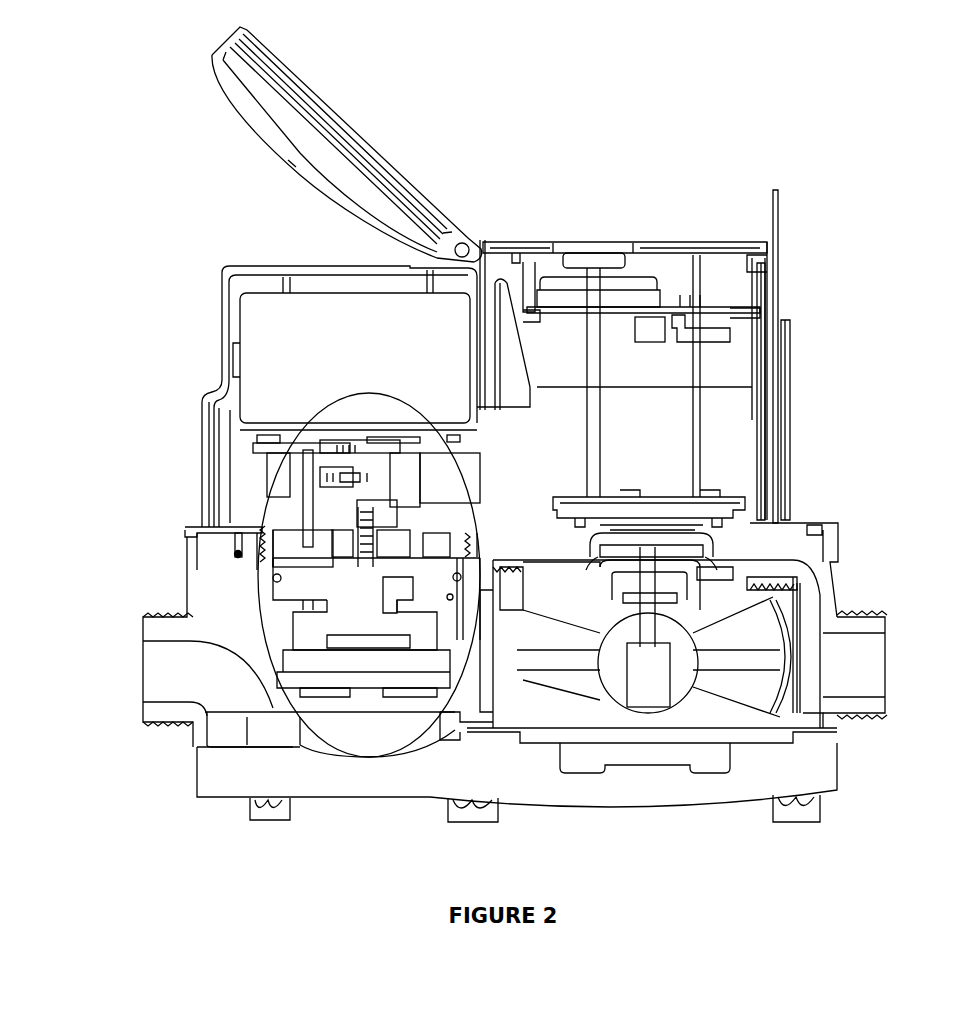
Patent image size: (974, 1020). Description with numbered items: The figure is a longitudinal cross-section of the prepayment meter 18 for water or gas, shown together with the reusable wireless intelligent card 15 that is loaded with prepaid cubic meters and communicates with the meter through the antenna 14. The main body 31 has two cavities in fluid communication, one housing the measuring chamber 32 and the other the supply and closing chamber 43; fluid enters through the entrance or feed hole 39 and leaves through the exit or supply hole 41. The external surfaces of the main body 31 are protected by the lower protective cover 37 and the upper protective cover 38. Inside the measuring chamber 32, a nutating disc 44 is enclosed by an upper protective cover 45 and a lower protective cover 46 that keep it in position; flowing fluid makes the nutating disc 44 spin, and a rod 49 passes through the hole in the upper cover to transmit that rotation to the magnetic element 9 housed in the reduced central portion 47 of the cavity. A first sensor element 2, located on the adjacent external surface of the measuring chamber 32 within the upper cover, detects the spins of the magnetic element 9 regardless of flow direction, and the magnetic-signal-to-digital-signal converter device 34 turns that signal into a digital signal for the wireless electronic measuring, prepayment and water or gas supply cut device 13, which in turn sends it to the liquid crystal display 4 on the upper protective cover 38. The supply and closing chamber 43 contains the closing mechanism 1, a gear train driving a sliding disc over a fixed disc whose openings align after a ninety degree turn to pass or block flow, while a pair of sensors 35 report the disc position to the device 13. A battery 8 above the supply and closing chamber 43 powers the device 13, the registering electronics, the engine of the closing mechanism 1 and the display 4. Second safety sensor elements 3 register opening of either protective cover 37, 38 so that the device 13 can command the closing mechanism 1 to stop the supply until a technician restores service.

The closing mechanism 1 is at (307, 682).
The first sensor element 2 is at (608, 521).
The second safety sensor elements 3 is at (520, 725).
The liquid crystal display 4 is at (625, 247).
The battery 8 is at (338, 313).
The magnetic element 9 is at (682, 547).
The wireless electronic measuring, prepayment and water or gas supply cut device 13 is at (727, 312).
The antenna 14 is at (760, 370).
The wireless intelligent card 15 is at (776, 212).
The meter 18 is at (226, 275).
The main body 31 is at (800, 547).
The measuring chamber 32 is at (648, 625).
The magnetic-signal-to-digital-signal converter device 34 is at (688, 513).
The pair of sensors 35 is at (392, 543).
The lower protective cover 37 is at (228, 773).
The upper protective cover 38 is at (710, 247).
The entrance or feed hole 39 is at (853, 665).
The exit or supply hole 41 is at (168, 672).
The supply and closing chamber 43 is at (333, 405).
The nutating disc 44 is at (548, 660).
The upper protective cover of the nutating disc 45 is at (773, 598).
The lower protective cover of the nutating disc 46 is at (693, 692).
The reduced central portion 47 is at (598, 548).
The rod 49 is at (750, 685).